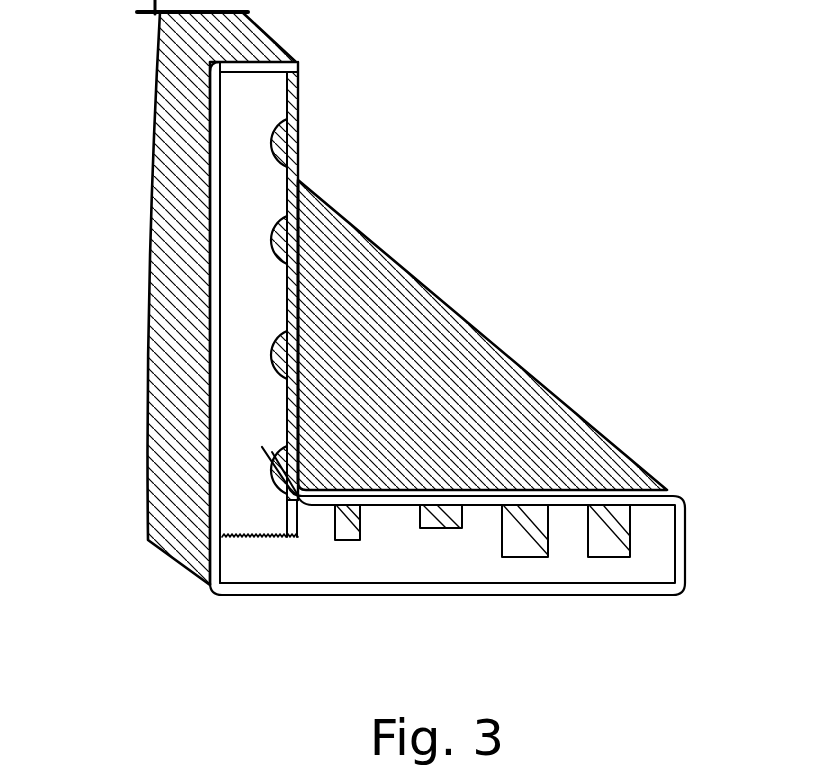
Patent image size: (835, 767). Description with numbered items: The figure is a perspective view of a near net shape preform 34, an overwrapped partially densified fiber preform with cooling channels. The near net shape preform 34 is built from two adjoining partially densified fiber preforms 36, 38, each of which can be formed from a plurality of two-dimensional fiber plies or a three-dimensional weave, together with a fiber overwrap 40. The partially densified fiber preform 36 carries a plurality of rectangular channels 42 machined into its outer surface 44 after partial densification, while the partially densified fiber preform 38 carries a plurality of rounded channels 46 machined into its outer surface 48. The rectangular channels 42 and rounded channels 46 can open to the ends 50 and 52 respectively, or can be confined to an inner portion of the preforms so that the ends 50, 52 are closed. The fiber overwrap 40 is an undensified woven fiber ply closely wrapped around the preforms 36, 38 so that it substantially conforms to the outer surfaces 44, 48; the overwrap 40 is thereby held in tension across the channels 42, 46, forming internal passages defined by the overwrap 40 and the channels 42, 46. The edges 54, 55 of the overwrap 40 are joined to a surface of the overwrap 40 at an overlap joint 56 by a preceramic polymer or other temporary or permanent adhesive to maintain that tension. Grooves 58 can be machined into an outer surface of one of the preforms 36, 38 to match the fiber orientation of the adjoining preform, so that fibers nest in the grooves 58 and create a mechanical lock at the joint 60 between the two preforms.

The near net shape preform 34 is at (668, 218).
The partially densified fiber preform 36 is at (447, 545).
The partially densified fiber preform 38 is at (254, 323).
The fiber overwrap 40 is at (497, 390).
The rectangular channels 42 is at (523, 540).
The outer surface 44 is at (646, 502).
The rounded channels 46 is at (360, 430).
The outer surface 48 is at (292, 182).
The end 50 is at (660, 543).
The end 52 is at (243, 186).
The edge of overwrap 54 is at (355, 428).
The edge of overwrap 55 is at (465, 500).
The overlap joint 56 is at (466, 486).
The grooves 58 is at (258, 540).
The joint 60 is at (241, 515).